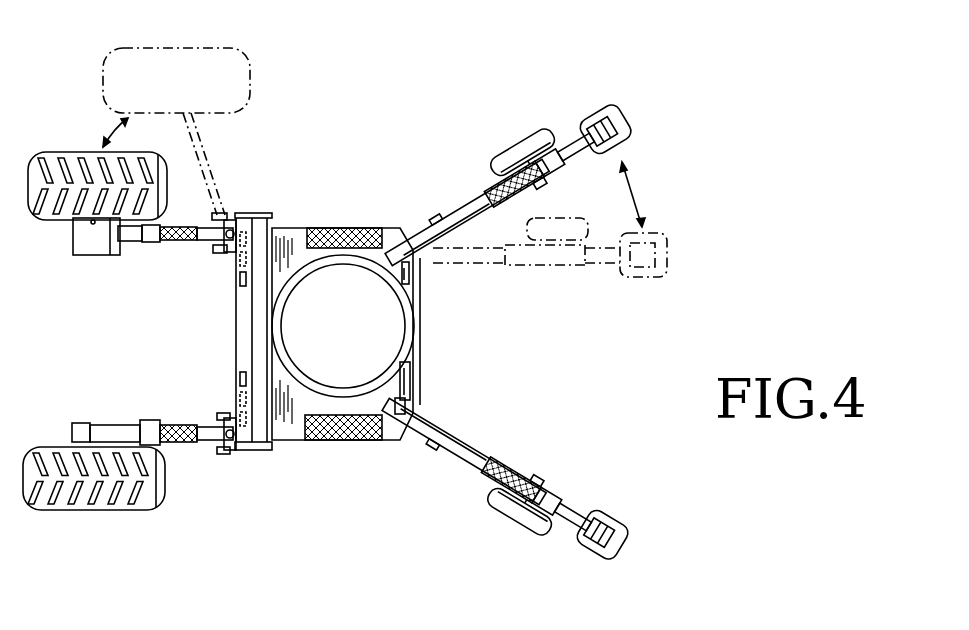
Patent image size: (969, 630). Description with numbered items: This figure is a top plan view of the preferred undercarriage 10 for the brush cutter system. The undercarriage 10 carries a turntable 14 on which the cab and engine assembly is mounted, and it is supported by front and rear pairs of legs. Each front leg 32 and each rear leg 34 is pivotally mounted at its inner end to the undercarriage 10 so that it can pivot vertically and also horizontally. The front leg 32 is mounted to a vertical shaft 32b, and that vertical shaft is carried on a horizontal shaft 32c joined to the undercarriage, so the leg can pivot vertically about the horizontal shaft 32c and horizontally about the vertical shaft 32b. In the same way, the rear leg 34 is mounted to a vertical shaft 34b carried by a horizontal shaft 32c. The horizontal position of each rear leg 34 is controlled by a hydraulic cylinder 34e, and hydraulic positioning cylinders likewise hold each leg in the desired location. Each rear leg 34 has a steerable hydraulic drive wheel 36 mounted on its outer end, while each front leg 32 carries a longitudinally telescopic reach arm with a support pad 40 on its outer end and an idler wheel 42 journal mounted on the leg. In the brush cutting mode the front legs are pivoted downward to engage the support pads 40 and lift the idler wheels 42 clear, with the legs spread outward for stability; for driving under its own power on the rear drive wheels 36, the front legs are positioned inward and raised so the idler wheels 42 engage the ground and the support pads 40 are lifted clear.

The undercarriage 10 is at (337, 441).
The turntable 14 is at (316, 276).
The front leg 32 is at (470, 201).
The vertical shaft 32b is at (400, 441).
The horizontal shaft 32c is at (420, 287).
The rear leg 34 is at (182, 245).
The vertical shaft 34b is at (233, 214).
The hydraulic cylinder 34e is at (236, 385).
The steerable hydraulic drive wheel 36 is at (98, 152).
The support pad 40 is at (625, 121).
The idler wheel 42 is at (515, 146).